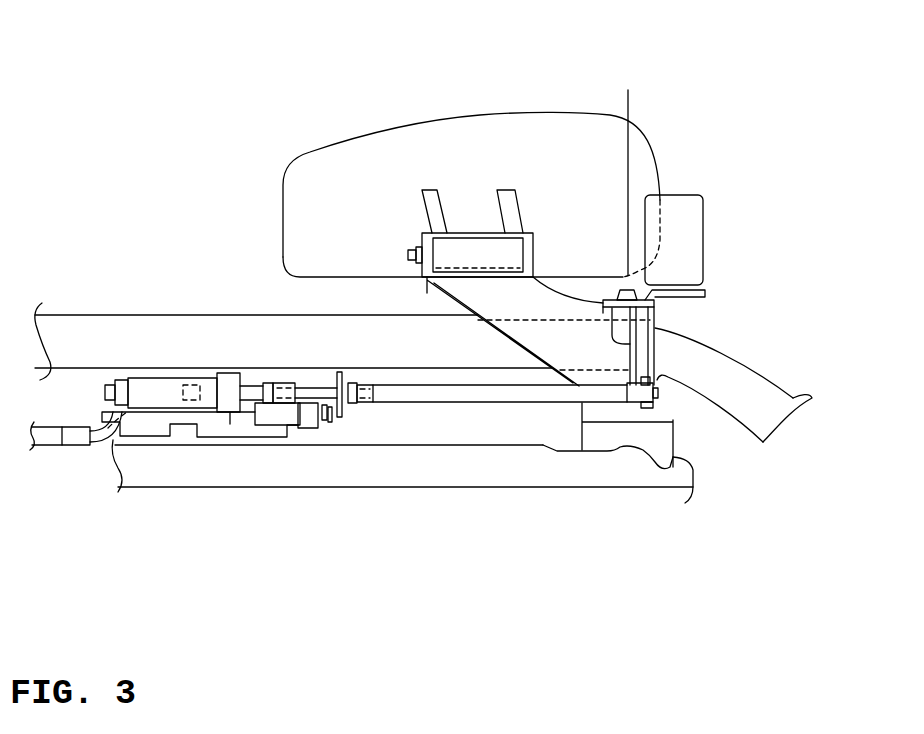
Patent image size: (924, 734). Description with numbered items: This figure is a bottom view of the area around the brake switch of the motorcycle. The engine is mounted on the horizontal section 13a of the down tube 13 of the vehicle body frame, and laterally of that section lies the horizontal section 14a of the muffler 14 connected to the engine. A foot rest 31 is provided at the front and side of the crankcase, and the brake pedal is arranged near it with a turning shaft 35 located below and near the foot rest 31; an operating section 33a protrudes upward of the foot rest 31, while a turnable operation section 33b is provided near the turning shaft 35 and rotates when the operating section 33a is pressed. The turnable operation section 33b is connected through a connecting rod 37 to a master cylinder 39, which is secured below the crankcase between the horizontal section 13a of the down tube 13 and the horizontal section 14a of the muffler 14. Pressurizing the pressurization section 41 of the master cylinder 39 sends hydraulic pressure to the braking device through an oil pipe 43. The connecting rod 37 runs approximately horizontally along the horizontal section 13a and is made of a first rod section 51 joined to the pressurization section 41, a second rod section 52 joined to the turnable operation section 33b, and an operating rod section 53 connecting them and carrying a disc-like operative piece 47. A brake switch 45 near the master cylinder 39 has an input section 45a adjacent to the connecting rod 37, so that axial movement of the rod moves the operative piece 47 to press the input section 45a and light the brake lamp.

The down tube 13 is at (578, 488).
The horizontal section of the down tube 13a is at (515, 488).
The muffler 14 is at (773, 380).
The horizontal section of the muffler 14a is at (83, 315).
The foot rest 31 is at (461, 117).
The operating section 33a is at (703, 215).
The turnable operation section 33b is at (647, 360).
The turning shaft 35 is at (628, 90).
The connecting rod 37 is at (477, 404).
The master cylinder 39 is at (152, 378).
The pressurization section 41 is at (193, 380).
The oil pipe 43 is at (50, 447).
The brake switch 45 is at (307, 430).
The input section 45a is at (320, 430).
The operative piece 47 is at (363, 412).
The first rod section 51 is at (248, 376).
The second rod section 52 is at (434, 403).
The operating rod section 53 is at (308, 385).